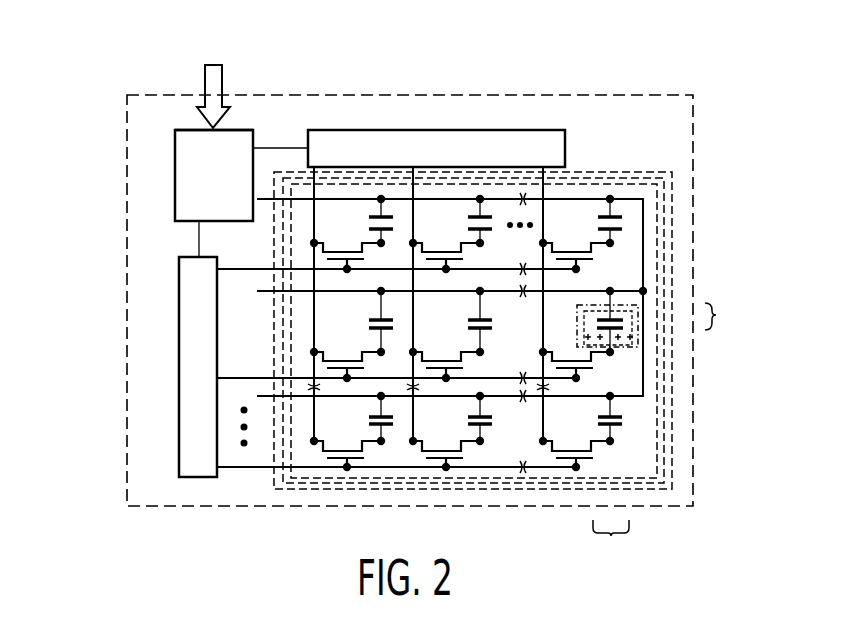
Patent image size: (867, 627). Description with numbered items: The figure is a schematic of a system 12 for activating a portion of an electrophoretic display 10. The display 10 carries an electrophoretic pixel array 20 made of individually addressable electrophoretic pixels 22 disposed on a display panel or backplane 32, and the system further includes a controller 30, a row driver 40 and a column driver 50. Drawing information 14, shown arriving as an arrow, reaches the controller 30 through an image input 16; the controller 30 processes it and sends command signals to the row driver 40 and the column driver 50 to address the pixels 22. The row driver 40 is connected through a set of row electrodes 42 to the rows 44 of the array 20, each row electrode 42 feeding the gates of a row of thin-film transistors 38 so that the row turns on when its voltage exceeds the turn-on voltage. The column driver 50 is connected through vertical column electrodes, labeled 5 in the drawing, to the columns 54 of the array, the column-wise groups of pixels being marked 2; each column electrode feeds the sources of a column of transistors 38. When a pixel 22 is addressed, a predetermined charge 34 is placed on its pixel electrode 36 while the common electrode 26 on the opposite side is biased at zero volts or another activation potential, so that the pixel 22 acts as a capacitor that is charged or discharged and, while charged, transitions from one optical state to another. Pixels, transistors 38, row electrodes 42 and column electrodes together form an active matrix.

The pixel 2 is at (477, 261).
The data line 5 is at (317, 183).
The electrophoretic display 10 is at (633, 172).
The system 12 is at (125, 50).
The drawing information 14 is at (222, 72).
The image input 16 is at (242, 130).
The electrophoretic pixel array 20 is at (638, 178).
The electrophoretic pixel 22 is at (628, 303).
The common electrode 26 is at (623, 197).
The controller 30 is at (175, 170).
The display panel or backplane 32 is at (657, 173).
The charge 34 is at (613, 343).
The pixel electrode 36 is at (617, 338).
The thin-film transistor 38 is at (587, 370).
The row driver 40 is at (179, 270).
The row electrode 42 is at (245, 271).
The row 44 is at (670, 322).
The column driver 50 is at (323, 128).
The column 54 is at (611, 548).